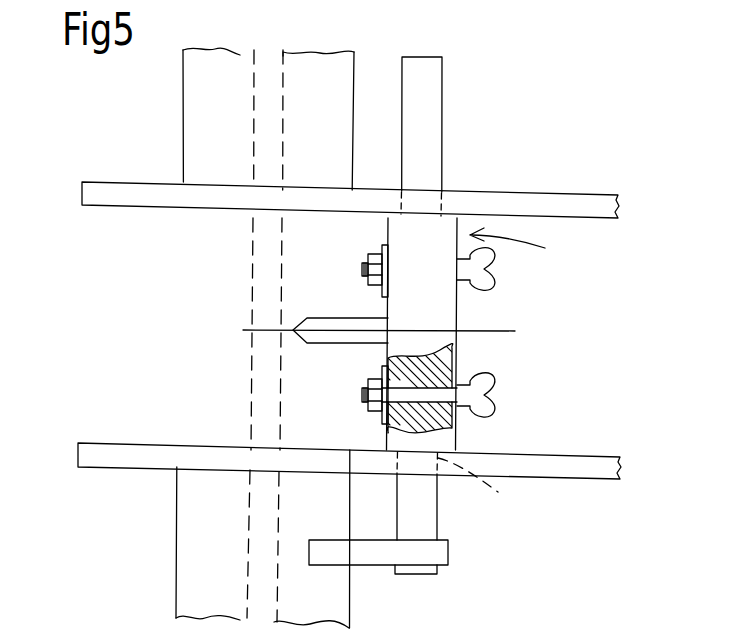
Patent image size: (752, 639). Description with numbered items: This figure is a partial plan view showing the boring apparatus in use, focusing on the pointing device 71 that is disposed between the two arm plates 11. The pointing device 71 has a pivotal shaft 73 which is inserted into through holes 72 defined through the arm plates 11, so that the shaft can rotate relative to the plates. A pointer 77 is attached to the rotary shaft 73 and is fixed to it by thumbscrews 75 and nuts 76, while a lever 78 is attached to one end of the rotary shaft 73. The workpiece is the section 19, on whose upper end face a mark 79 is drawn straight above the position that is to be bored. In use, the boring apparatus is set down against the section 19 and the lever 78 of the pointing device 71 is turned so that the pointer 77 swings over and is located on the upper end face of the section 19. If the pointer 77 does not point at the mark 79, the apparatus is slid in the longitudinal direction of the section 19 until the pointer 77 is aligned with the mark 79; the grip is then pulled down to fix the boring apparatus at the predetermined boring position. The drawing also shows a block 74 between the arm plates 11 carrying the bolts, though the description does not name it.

The arm plates 11 is at (537, 191).
The section 19 is at (348, 77).
The pointing device 71 is at (526, 247).
The through holes 72 is at (489, 489).
The pivotal shaft 73 is at (428, 140).
The clamp block 74 is at (437, 303).
The thumbscrews 75 is at (487, 380).
The nuts 76 is at (373, 412).
The pointer 77 is at (305, 318).
The lever 78 is at (450, 556).
The mark 79 is at (259, 330).